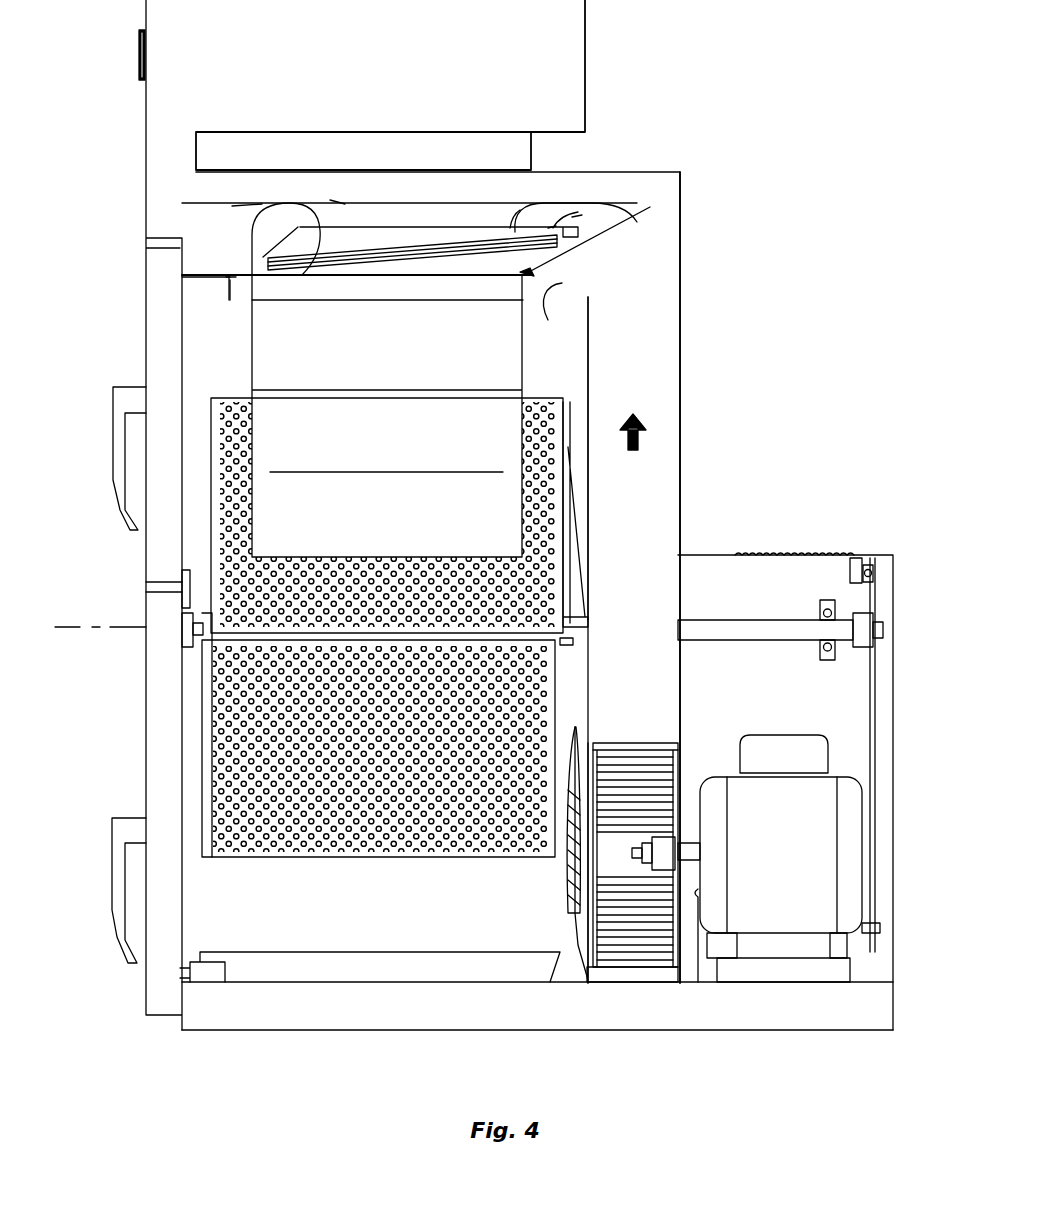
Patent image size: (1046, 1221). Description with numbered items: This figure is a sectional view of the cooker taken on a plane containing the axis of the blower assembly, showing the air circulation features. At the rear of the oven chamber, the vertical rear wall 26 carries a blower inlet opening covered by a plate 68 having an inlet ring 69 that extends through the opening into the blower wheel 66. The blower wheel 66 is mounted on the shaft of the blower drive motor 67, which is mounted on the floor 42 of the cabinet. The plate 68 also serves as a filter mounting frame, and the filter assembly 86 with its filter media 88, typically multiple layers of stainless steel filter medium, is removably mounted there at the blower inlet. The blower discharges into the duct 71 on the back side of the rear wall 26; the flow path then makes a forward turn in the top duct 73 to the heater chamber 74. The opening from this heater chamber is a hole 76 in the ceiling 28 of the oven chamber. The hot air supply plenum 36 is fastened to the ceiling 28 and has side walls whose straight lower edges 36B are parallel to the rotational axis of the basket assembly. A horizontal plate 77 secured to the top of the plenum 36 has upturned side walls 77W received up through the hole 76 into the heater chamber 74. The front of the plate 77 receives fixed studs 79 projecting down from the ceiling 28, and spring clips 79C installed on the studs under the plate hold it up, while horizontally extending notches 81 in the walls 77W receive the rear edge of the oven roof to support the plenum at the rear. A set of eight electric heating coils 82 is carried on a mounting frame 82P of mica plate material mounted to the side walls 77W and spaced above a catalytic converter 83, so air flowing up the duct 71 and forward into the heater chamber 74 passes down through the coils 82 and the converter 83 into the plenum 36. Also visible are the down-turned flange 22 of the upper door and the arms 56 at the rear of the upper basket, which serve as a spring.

The down-turned flange 22 is at (186, 578).
The vertical rear wall 26 is at (562, 350).
The ceiling 28 is at (182, 292).
The hot air supply plenum 36 is at (402, 450).
The lower edges of plenum side walls 36B is at (349, 580).
The floor of the cabinet 42 is at (770, 982).
The arms 56 is at (583, 550).
The blower wheel 66 is at (645, 962).
The blower drive motor 67 is at (788, 863).
The plate 68 is at (586, 747).
The inlet ring 69 is at (587, 757).
The duct 71 is at (627, 328).
The top duct 73 is at (578, 217).
The heater chamber 74 is at (515, 228).
The hole 76 is at (383, 280).
The horizontal plate 77 is at (226, 292).
The upturned side walls 77W is at (650, 207).
The fixed studs 79 is at (229, 290).
The spring clips 79C is at (230, 283).
The notches 81 is at (535, 275).
The electric heating coils 82 is at (343, 203).
The mounting frame 82P is at (389, 258).
The catalytic converter 83 is at (235, 206).
The filter assembly 86 is at (560, 883).
The filter media 88 is at (572, 907).